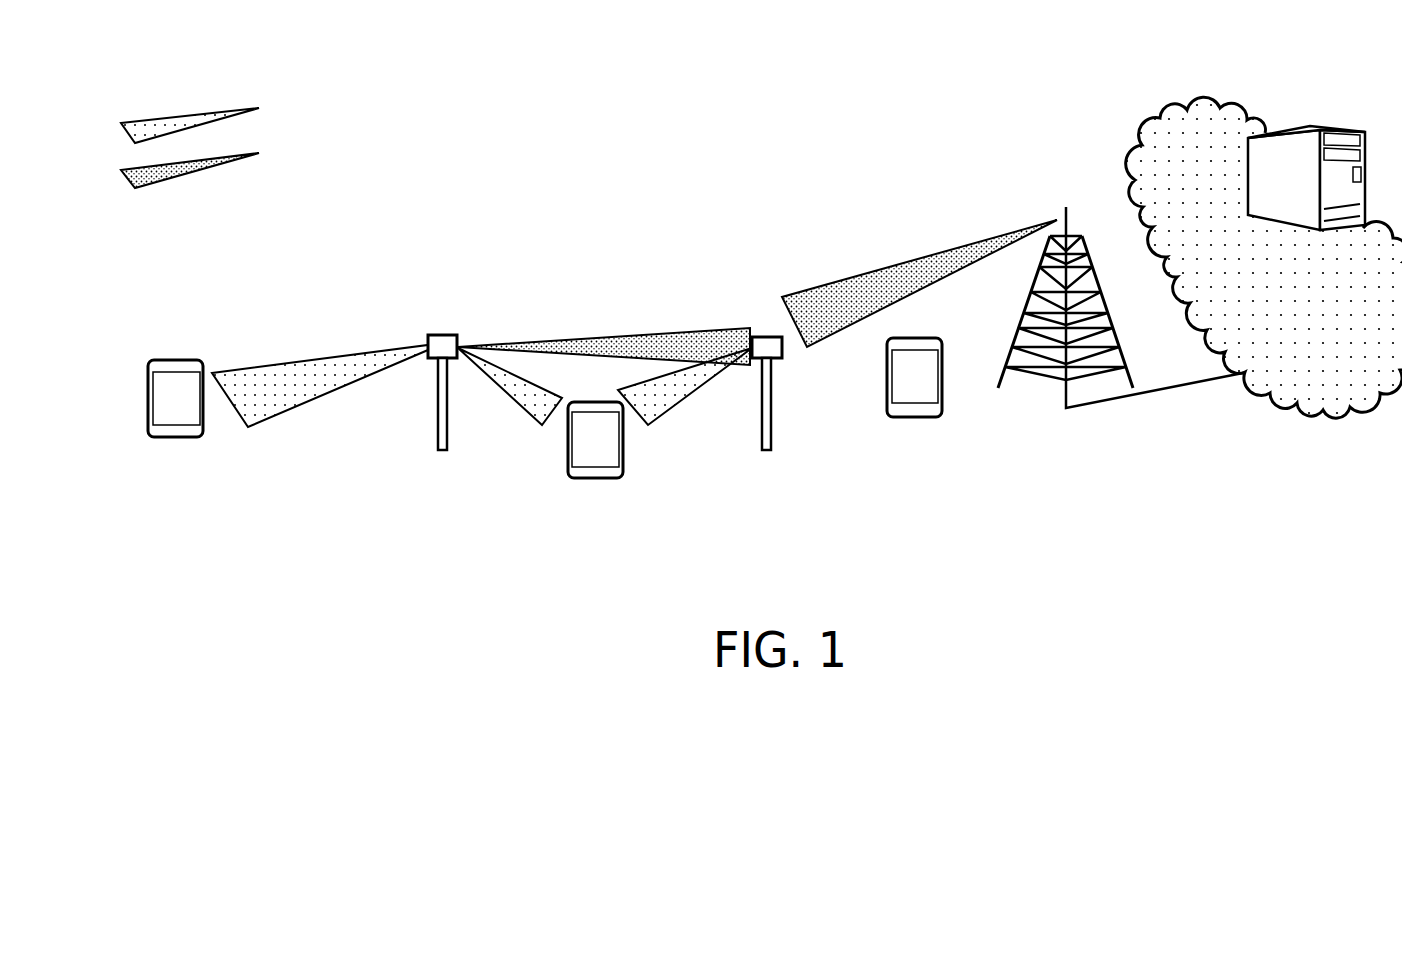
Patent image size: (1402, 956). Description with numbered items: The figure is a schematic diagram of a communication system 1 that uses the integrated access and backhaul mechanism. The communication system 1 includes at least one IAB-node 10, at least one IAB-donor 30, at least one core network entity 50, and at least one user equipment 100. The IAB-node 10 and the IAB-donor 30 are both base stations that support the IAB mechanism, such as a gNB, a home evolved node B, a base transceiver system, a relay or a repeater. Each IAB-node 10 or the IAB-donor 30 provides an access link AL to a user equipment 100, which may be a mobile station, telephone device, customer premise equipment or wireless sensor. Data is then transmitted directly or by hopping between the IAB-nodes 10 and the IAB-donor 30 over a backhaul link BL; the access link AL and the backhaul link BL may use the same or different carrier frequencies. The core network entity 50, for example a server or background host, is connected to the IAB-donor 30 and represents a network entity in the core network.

The communication system 1 is at (1342, 498).
The IAB-node 10 is at (442, 333).
The IAB-donor 30 is at (1066, 205).
The core network entity 50 is at (1340, 125).
The user equipment 100 is at (173, 360).
The access link AL is at (212, 116).
The backhaul link BL is at (212, 163).